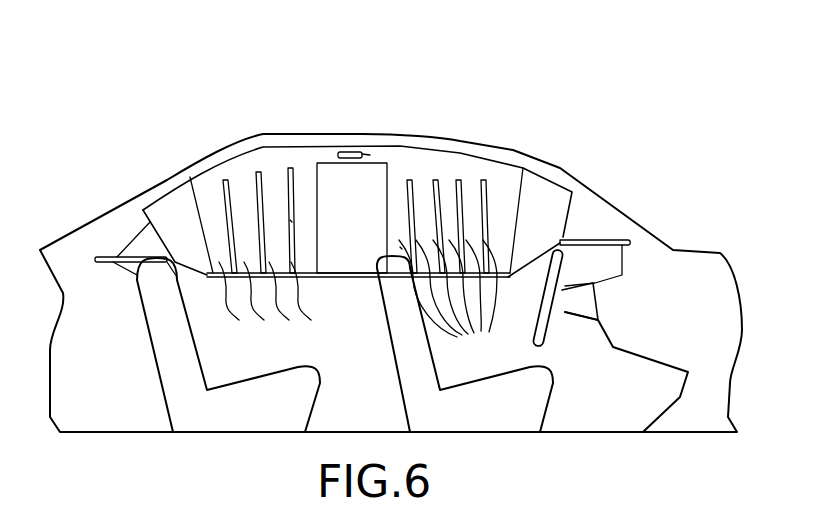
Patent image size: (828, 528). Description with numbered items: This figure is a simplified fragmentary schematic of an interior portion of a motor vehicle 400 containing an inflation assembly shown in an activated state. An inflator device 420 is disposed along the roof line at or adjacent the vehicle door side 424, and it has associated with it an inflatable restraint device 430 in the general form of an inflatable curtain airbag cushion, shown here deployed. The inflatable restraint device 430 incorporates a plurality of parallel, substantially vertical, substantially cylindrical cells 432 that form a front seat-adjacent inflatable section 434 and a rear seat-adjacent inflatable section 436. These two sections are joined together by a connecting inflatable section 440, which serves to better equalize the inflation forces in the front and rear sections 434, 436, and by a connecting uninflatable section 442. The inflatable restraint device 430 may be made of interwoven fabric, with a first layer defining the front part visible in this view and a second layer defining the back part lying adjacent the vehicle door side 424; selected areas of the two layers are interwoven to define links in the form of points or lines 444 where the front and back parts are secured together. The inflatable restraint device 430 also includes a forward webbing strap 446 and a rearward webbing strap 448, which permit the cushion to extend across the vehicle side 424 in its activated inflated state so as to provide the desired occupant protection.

The motor vehicle 400 is at (596, 158).
The inflator device 420 is at (353, 153).
The vehicle door side 424 is at (230, 367).
The inflatable restraint device 430 is at (333, 250).
The cells 432 is at (360, 303).
The front seat-adjacent inflatable section 434 is at (448, 190).
The rear seat-adjacent inflatable section 436 is at (272, 190).
The connecting inflatable section 440 is at (378, 155).
The connecting uninflatable section 442 is at (347, 260).
The points or lines 444 is at (400, 247).
The forward webbing strap 446 is at (603, 240).
The rearward webbing strap 448 is at (135, 252).